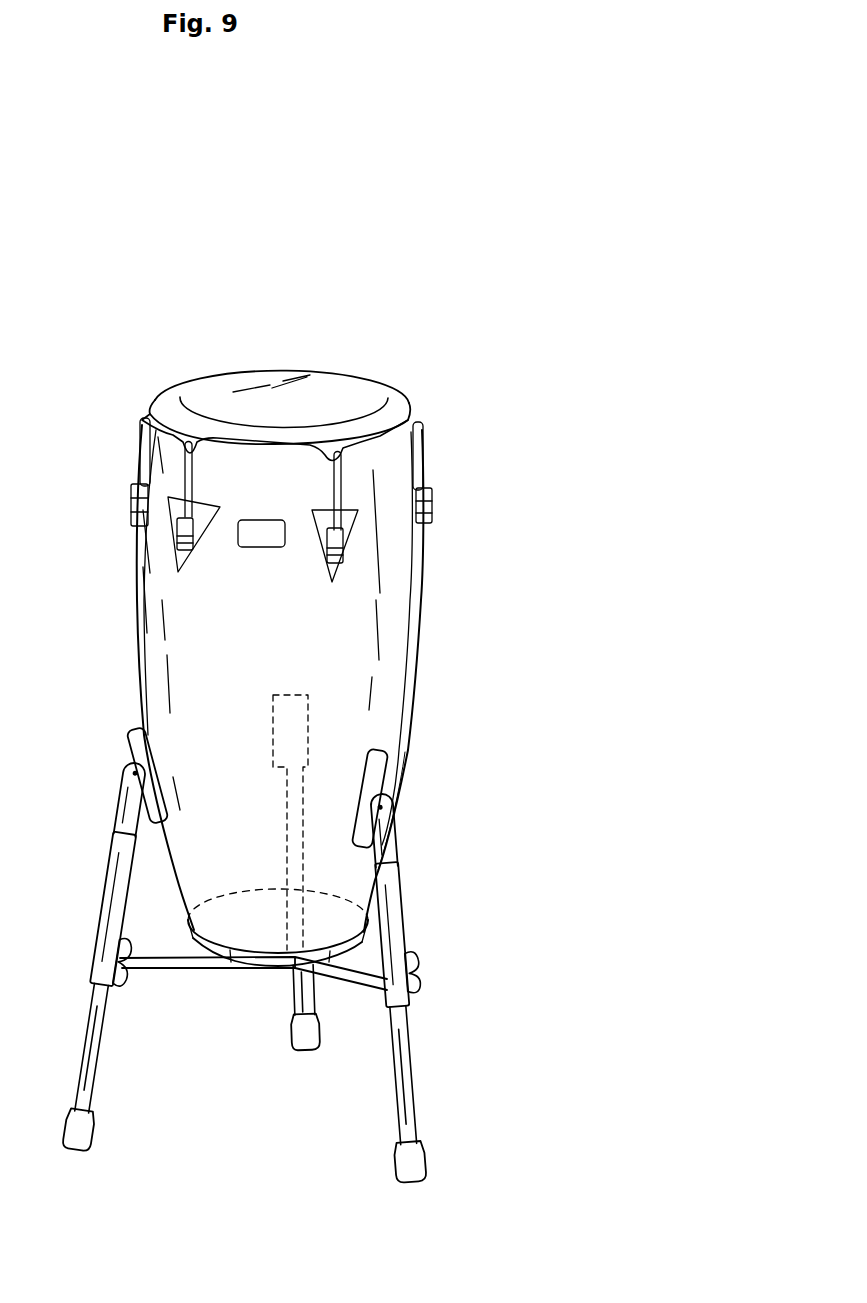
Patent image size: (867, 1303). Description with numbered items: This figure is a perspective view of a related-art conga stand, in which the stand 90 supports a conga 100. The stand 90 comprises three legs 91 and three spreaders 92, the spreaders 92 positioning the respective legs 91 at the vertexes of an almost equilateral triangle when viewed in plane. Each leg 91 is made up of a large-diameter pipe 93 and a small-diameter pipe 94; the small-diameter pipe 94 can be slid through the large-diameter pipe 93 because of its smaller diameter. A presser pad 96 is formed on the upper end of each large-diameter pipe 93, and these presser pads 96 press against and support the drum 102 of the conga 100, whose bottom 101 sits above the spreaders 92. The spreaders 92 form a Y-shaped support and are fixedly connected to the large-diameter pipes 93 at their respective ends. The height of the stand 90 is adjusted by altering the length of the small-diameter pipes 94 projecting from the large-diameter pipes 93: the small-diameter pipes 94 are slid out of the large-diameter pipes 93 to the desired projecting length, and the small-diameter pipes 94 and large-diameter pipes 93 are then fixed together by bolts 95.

The conga 100 is at (432, 586).
The bottom 101 is at (247, 920).
The drum 102 is at (393, 732).
The stand 90 is at (286, 921).
The leg 91 is at (97, 912).
The spreader 92 is at (192, 968).
The large-diameter pipe 93 is at (112, 837).
The small-diameter pipe 94 is at (98, 1062).
The bolt 95 is at (130, 950).
The presser pad 96 is at (137, 730).